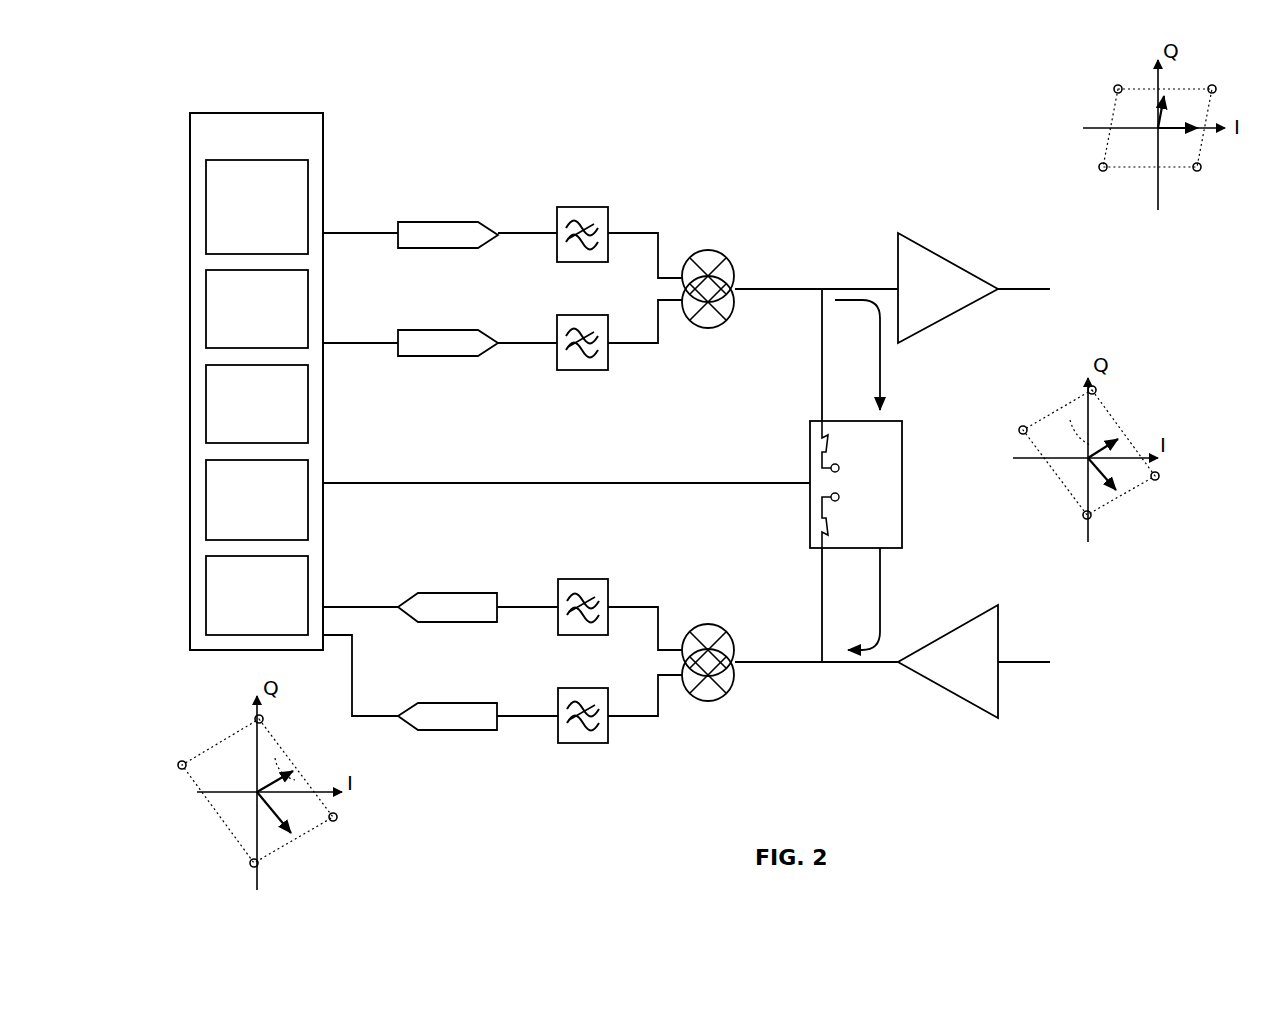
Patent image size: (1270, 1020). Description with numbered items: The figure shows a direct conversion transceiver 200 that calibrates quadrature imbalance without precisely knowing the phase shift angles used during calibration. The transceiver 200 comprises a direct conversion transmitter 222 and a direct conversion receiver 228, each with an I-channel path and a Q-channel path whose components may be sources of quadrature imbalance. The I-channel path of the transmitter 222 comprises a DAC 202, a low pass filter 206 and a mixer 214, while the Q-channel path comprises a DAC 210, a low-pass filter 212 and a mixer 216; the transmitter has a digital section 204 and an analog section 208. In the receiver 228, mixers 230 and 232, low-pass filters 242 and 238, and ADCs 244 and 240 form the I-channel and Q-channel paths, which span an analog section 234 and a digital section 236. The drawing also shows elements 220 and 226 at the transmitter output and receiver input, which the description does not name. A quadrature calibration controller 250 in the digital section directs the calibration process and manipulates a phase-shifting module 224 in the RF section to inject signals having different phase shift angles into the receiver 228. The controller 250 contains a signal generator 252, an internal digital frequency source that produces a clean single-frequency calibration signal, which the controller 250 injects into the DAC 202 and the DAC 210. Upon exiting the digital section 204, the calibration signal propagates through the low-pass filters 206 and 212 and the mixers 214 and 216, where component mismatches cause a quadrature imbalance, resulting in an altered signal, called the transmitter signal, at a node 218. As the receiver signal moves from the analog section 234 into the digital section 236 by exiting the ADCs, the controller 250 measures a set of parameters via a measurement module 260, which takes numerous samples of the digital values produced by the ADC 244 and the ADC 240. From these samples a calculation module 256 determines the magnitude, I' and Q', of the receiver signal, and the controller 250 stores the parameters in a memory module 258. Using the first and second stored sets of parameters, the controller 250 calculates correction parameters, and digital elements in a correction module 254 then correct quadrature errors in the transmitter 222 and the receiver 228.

The direct conversion transceiver 200 is at (365, 67).
The DAC 202 is at (410, 220).
The digital section 204 is at (460, 160).
The low pass filter 206 is at (568, 207).
The analog section 208 is at (620, 165).
The DAC 210 is at (410, 328).
The low-pass filter 212 is at (568, 315).
The mixer 214 is at (712, 253).
The mixer 216 is at (735, 310).
The node 218 is at (765, 288).
The transmit amplifier 220 is at (945, 260).
The direct conversion transmitter 222 is at (1148, 286).
The phase-shifting module 224 is at (902, 457).
The receive amplifier 226 is at (996, 633).
The direct conversion receiver 228 is at (1148, 667).
The mixer 230 is at (712, 627).
The mixer 232 is at (735, 678).
The analog section 234 is at (607, 797).
The digital section 236 is at (450, 788).
The low-pass filter 238 is at (568, 688).
The ADC 240 is at (447, 702).
The low-pass filter 242 is at (568, 577).
The ADC 244 is at (447, 592).
The quadrature calibration controller 250 is at (262, 113).
The signal generator 252 is at (257, 207).
The correction module 254 is at (257, 309).
The calculation module 256 is at (257, 404).
The memory module 258 is at (257, 500).
The measurement module 260 is at (257, 595).